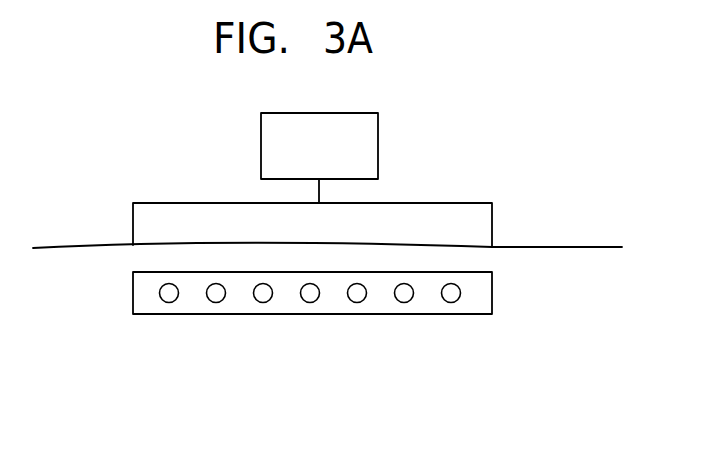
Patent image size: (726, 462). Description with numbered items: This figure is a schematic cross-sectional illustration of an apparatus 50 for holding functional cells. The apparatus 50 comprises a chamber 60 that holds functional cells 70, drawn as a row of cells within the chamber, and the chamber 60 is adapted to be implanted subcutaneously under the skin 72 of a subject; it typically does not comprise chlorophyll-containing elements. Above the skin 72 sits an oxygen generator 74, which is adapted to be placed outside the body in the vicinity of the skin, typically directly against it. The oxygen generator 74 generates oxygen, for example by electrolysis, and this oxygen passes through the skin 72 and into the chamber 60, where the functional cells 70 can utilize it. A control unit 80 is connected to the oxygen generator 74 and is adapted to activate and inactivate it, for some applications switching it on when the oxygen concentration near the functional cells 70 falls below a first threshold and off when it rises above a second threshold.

The apparatus 50 is at (526, 149).
The chamber 60 is at (410, 314).
The functional cells 70 is at (258, 298).
The skin 72 is at (580, 247).
The oxygen generator 74 is at (223, 203).
The control unit 80 is at (378, 139).